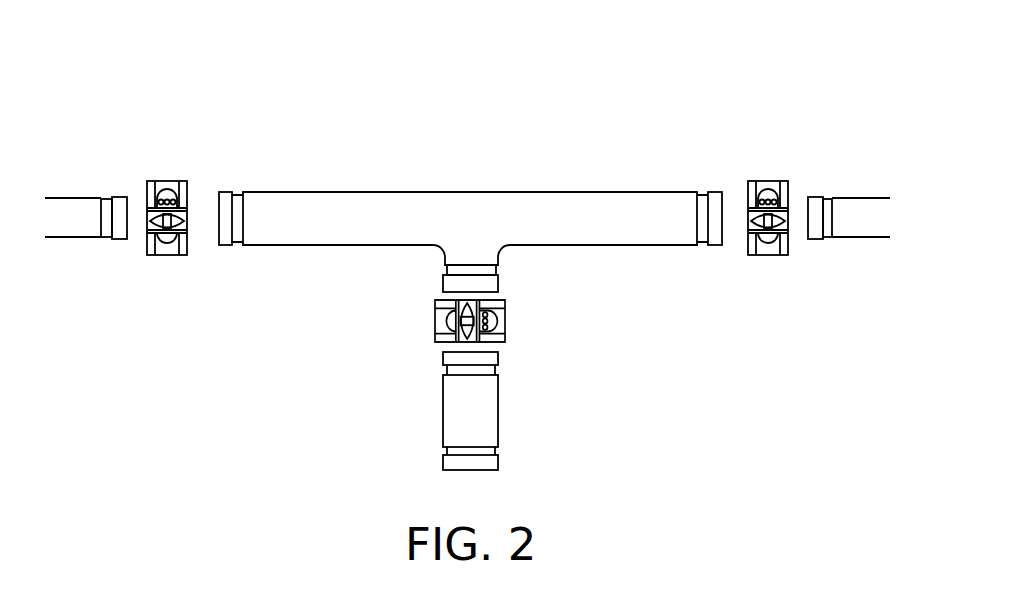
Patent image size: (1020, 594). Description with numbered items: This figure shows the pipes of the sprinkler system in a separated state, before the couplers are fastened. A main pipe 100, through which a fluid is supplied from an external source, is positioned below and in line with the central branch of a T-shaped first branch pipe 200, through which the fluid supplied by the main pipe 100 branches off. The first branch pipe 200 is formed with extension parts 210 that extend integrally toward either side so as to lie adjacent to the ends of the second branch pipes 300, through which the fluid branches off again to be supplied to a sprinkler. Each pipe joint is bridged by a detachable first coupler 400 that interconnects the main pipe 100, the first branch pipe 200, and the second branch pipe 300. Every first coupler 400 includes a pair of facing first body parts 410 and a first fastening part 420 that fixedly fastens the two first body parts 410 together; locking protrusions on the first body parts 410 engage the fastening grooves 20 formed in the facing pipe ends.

The first branch pipe 200 is at (578, 80).
The extension part 210 is at (304, 196).
The fastening groove 20 is at (108, 240).
The second branch pipe 300 is at (73, 238).
The main pipe 100 is at (488, 418).
The first coupler 400 is at (474, 226).
The first body part 410 is at (182, 182).
The first fastening part 420 is at (205, 124).